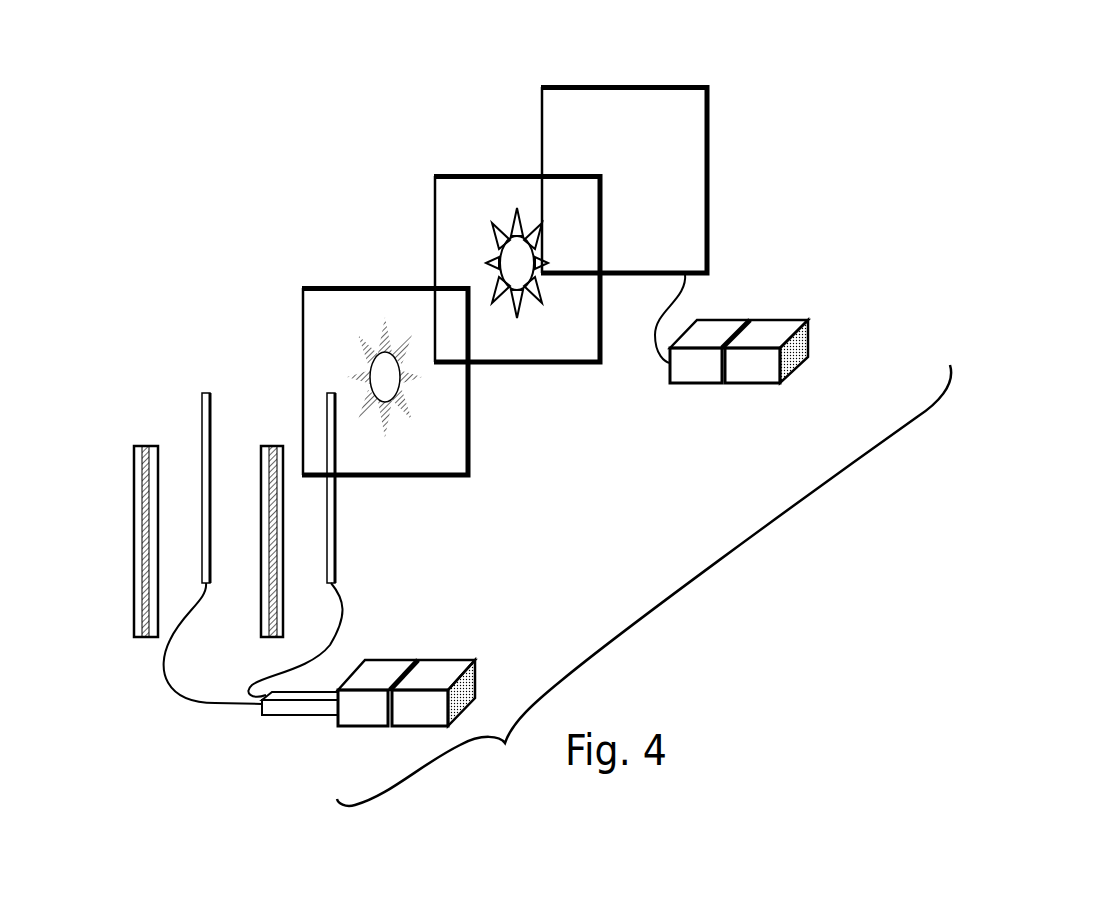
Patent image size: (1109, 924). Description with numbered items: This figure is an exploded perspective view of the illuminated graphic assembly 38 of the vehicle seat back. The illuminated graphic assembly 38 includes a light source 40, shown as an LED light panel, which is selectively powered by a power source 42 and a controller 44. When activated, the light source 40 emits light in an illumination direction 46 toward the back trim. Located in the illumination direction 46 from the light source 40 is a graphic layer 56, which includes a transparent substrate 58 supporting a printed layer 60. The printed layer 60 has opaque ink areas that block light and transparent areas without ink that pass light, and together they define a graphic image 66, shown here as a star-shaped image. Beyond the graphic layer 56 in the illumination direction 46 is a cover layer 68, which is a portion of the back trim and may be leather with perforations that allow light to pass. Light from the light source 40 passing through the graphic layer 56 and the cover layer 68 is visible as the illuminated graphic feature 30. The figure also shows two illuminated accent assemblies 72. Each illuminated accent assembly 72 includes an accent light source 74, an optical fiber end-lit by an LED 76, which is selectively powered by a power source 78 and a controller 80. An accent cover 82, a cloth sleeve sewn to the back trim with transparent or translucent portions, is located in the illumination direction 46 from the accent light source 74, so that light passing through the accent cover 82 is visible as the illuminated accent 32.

The illuminated graphic feature 30 is at (380, 338).
The illuminated accent 32 is at (145, 577).
The illuminated graphic assembly 38 is at (745, 64).
The light source 40 is at (707, 218).
The power source 42 is at (739, 351).
The controller 44 is at (688, 328).
The illumination direction 46 is at (518, 130).
The graphic layer 56 is at (503, 229).
The substrate 58 is at (484, 213).
The printed layer 60 is at (453, 207).
The graphic image 66 is at (500, 250).
The cover layer 68 is at (468, 475).
The illuminated accent assembly 72 is at (251, 528).
The accent light source 74 is at (210, 408).
The LED 76 is at (295, 707).
The power source 78 is at (406, 693).
The controller 80 is at (363, 708).
The accent cover 82 is at (135, 525).